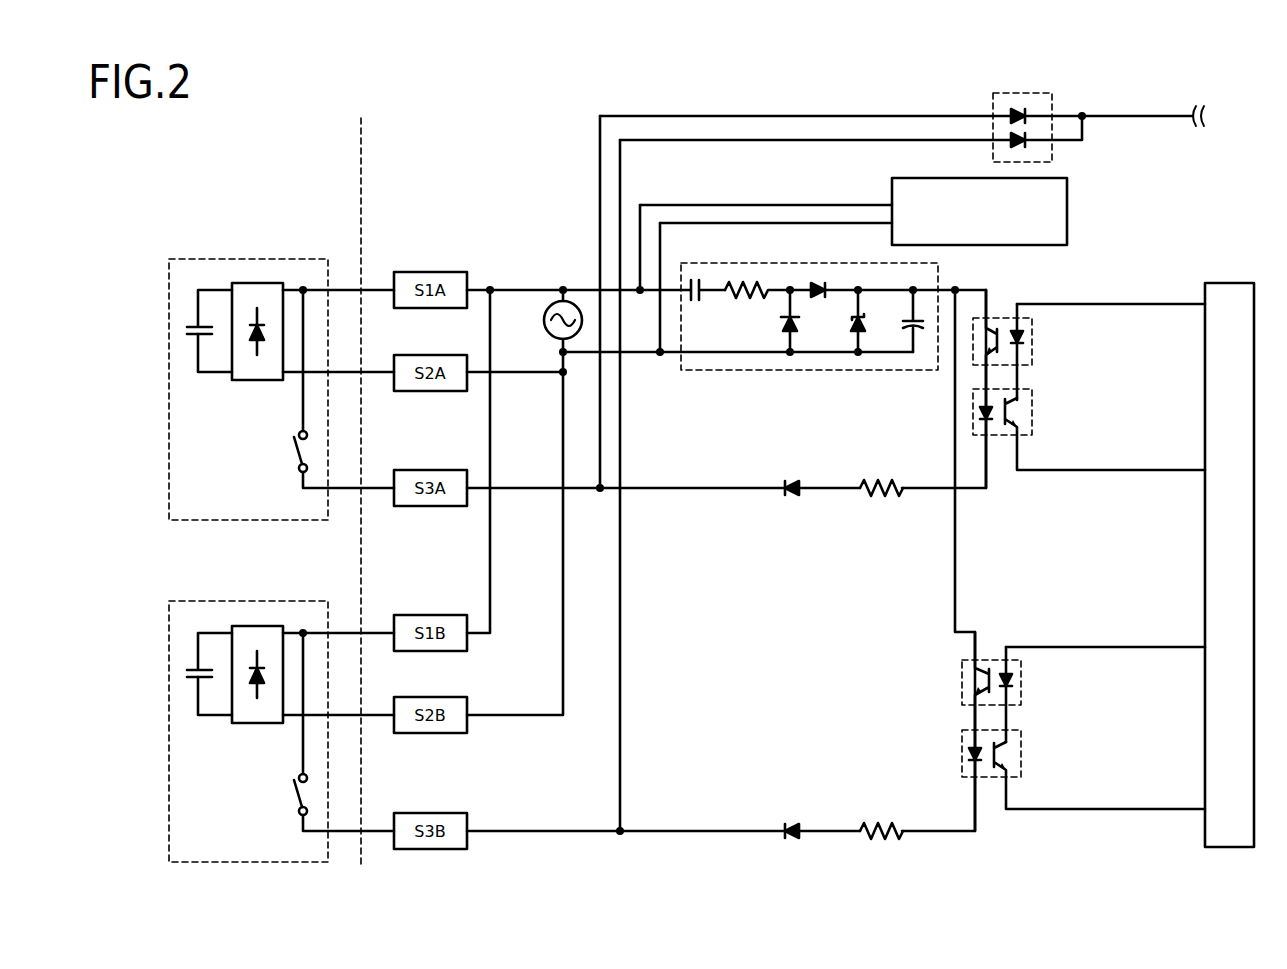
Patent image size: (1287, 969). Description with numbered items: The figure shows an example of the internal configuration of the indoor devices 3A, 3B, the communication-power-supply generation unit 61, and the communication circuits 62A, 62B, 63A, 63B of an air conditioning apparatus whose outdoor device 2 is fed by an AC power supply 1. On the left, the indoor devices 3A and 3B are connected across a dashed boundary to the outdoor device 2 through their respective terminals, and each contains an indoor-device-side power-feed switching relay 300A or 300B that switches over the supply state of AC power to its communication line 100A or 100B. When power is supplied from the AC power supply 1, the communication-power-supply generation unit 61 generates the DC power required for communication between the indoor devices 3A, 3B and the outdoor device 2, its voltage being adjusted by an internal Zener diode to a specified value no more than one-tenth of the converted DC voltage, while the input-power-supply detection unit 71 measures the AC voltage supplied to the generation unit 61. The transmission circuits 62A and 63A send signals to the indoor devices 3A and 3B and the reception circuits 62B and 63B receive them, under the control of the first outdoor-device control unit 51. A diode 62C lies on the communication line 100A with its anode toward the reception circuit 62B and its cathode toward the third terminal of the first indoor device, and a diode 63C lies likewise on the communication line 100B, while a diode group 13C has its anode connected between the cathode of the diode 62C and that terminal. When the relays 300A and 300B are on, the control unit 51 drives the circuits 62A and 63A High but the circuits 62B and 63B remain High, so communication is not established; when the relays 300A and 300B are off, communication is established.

The outdoor device 2 is at (361, 154).
The AC power supply 1 is at (545, 317).
The indoor device 3A is at (308, 258).
The indoor device 3B is at (308, 601).
The indoor-device-side power-feed switching relay 300A is at (294, 451).
The indoor-device-side power-feed switching relay 300B is at (294, 794).
The communication-power-supply generation unit 61 is at (753, 372).
The input-power-supply detection unit 71 is at (1068, 206).
The diode group 13C is at (1052, 151).
The first outdoor-device control unit 51 is at (1235, 282).
The communication circuit 62A is at (1033, 340).
The communication circuit 62B is at (1033, 411).
The diode 62C is at (793, 497).
The communication circuit 63A is at (1022, 681).
The communication circuit 63B is at (1022, 755).
The diode 63C is at (793, 822).
The communication line 100A is at (706, 492).
The communication line 100B is at (707, 828).